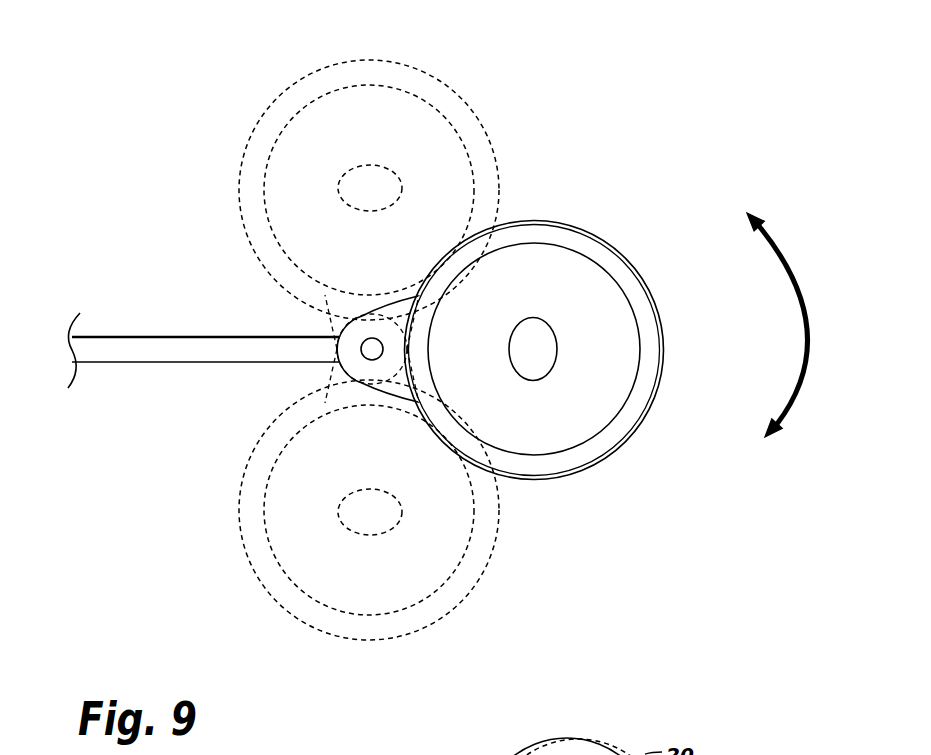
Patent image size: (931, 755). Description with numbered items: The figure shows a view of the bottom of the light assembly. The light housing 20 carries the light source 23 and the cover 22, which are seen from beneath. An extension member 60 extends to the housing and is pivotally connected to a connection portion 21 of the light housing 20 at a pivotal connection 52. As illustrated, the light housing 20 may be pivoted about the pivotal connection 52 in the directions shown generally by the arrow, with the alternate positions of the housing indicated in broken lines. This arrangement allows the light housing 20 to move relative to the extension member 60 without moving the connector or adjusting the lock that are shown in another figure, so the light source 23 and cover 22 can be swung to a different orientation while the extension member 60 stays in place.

The light housing 20 is at (652, 297).
The connection portion 21 is at (352, 383).
The cover 22 is at (558, 265).
The light source 23 is at (557, 352).
The pivotal connection 52 is at (340, 333).
The extension member 60 is at (128, 350).